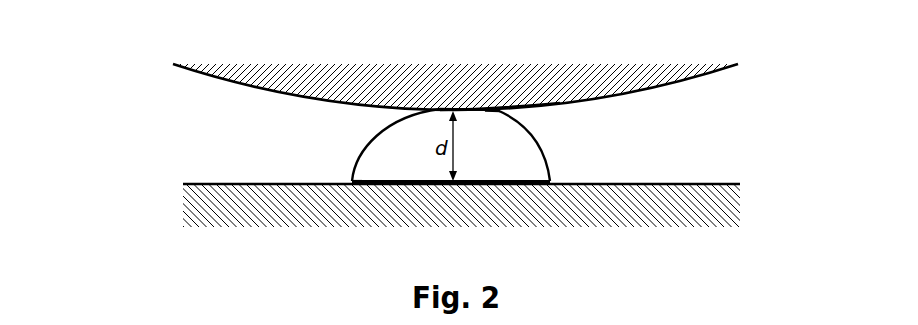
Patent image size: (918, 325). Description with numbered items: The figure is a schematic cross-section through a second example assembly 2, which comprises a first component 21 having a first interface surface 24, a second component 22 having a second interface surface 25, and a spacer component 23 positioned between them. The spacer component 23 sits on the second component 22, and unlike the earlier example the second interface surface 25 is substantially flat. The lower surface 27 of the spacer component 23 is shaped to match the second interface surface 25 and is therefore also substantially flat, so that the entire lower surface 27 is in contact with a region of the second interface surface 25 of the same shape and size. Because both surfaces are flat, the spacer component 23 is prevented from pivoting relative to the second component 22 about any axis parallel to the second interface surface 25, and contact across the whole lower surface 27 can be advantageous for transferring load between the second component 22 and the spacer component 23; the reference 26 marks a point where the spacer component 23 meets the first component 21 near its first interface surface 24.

The assembly 2 is at (104, 39).
The first component 21 is at (466, 95).
The second component 22 is at (464, 213).
The spacer component 23 is at (503, 165).
The first interface surface 24 is at (518, 107).
The second interface surface 25 is at (402, 184).
The contact point with upper body 26 is at (498, 117).
The lower surface 27 is at (385, 180).